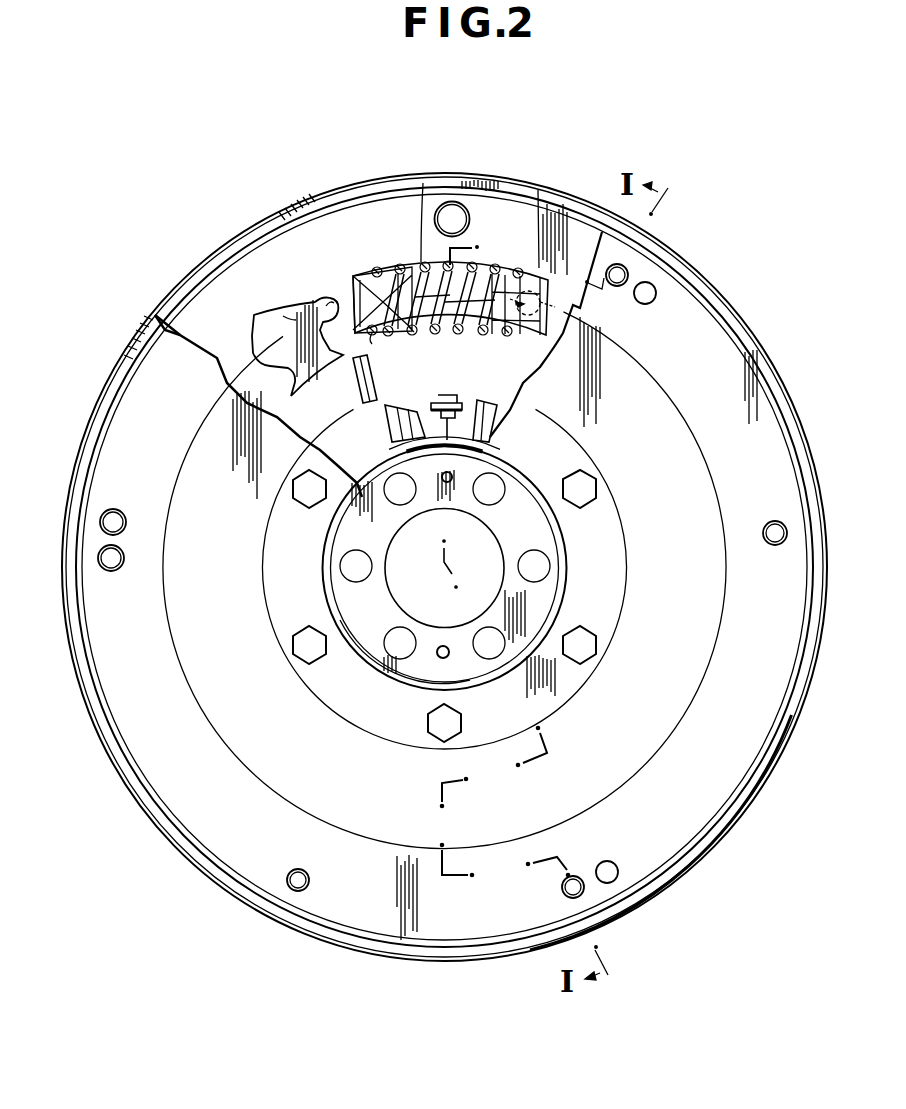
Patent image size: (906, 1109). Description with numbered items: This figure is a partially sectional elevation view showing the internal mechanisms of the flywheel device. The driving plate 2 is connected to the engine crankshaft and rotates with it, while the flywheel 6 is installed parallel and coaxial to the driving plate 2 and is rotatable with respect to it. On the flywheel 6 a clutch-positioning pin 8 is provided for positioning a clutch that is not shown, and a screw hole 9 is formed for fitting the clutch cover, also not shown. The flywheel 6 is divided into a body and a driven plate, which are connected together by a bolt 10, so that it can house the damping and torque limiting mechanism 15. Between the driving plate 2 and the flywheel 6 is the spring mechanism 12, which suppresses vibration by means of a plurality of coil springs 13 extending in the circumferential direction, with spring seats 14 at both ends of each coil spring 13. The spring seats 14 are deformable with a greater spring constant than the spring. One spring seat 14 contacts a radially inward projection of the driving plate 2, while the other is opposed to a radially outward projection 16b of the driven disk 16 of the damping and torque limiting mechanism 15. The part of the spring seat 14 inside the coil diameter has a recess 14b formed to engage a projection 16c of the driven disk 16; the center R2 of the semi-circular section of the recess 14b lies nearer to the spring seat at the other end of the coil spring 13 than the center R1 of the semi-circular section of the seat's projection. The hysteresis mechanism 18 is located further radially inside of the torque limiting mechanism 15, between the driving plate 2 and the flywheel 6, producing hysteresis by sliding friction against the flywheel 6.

The driving plate 2 is at (556, 212).
The flywheel 6 is at (147, 366).
The clutch-positioning pin 8 is at (618, 277).
The screw hole 9 is at (582, 893).
The bolt 10 is at (592, 489).
The spring mechanism 12 is at (461, 295).
The coil spring 13 is at (474, 265).
The spring seat 14 is at (368, 276).
The recess 14b is at (358, 334).
The damping and torque limiting mechanism 15 is at (343, 393).
The driven disk 16 is at (320, 330).
The radially outward projection 16b is at (290, 312).
The projection 16c is at (330, 300).
The hysteresis mechanism 18 is at (455, 396).
The center of the semi-circular section of the projection R1 is at (545, 314).
The center of the semi-circular section of the recess R2 is at (522, 334).